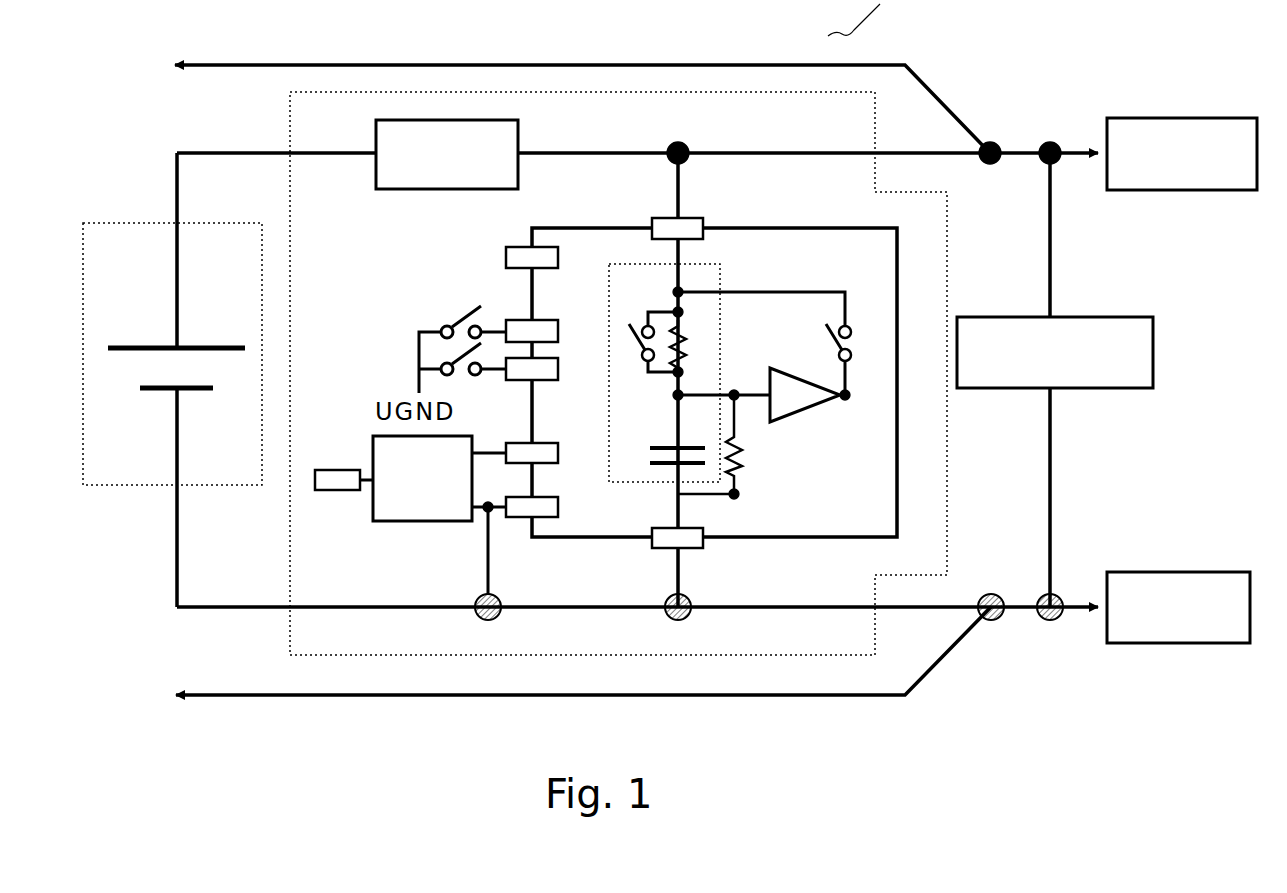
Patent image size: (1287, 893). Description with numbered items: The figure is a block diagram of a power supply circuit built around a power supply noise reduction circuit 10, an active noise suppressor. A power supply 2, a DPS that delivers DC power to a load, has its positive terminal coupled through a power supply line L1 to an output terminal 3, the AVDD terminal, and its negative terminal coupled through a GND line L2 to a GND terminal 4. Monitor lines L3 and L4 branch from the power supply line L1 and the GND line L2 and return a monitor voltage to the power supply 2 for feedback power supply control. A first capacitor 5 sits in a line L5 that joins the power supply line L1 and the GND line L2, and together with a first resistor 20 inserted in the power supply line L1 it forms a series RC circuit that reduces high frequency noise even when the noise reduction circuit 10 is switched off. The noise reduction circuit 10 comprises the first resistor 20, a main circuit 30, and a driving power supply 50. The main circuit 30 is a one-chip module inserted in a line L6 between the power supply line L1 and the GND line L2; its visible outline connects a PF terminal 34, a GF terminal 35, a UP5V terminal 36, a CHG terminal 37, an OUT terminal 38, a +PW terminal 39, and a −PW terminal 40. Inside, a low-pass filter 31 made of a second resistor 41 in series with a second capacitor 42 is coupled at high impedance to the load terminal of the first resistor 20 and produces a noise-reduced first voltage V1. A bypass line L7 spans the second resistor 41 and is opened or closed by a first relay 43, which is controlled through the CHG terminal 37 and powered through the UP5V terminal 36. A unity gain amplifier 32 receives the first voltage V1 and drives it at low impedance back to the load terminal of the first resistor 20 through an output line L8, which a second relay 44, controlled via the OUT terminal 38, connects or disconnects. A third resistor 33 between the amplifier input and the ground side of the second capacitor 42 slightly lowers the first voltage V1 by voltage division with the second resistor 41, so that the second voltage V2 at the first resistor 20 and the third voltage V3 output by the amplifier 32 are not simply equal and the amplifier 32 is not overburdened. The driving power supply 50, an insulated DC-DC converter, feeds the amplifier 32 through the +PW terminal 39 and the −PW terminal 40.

The power supply 2 is at (124, 222).
The output terminal (AVDD terminal) 3 is at (1190, 117).
The GND terminal 4 is at (1196, 572).
The first capacitor 5 is at (1122, 314).
The power supply noise reduction circuit 10 is at (290, 110).
The first resistor 20 is at (478, 190).
The main circuit 30 is at (789, 228).
The low-pass filter 31 is at (636, 482).
The unity gain amplifier 32 is at (790, 378).
The third resistor 33 is at (742, 458).
The PF terminal 34 is at (700, 224).
The GF terminal 35 is at (705, 550).
The UP5V terminal 36 is at (568, 246).
The CHG terminal 37 is at (568, 322).
The OUT terminal 38 is at (560, 364).
The +PW terminal 39 is at (560, 448).
The −PW terminal 40 is at (560, 502).
The second resistor 41 is at (686, 352).
The second capacitor 42 is at (650, 455).
The first relay (filter switching unit) 43 is at (640, 344).
The second relay (amplifier switching unit) 44 is at (824, 344).
The driving power supply 50 is at (412, 522).
The power supply line L1 is at (180, 153).
The GND line L2 is at (218, 616).
The monitor line L3 is at (700, 65).
The monitor line L4 is at (709, 700).
The line L5 is at (1052, 264).
The line L6 is at (670, 196).
The bypass line L7 is at (660, 308).
The output line L8 is at (830, 292).
The first voltage V1 is at (702, 400).
The second voltage V2 is at (690, 147).
The third voltage V3 is at (850, 395).